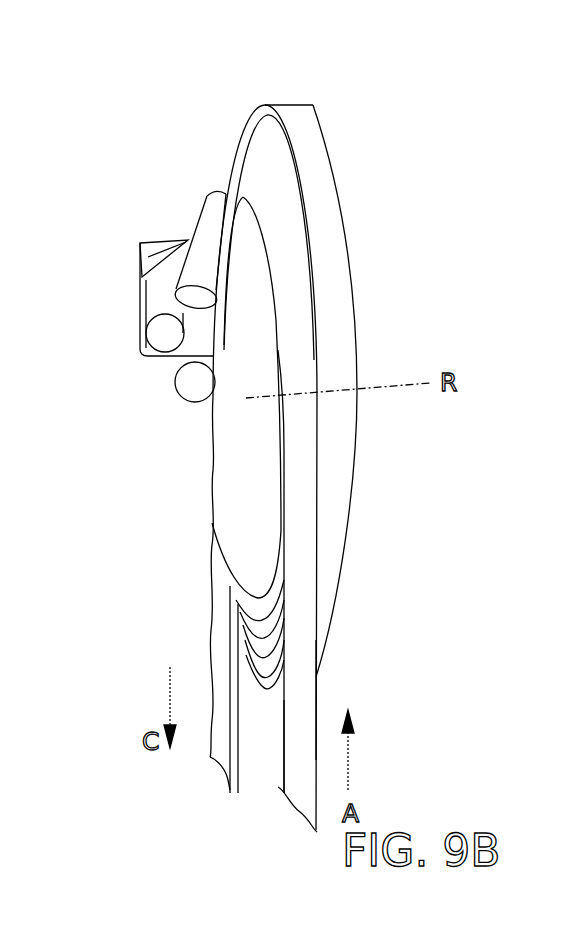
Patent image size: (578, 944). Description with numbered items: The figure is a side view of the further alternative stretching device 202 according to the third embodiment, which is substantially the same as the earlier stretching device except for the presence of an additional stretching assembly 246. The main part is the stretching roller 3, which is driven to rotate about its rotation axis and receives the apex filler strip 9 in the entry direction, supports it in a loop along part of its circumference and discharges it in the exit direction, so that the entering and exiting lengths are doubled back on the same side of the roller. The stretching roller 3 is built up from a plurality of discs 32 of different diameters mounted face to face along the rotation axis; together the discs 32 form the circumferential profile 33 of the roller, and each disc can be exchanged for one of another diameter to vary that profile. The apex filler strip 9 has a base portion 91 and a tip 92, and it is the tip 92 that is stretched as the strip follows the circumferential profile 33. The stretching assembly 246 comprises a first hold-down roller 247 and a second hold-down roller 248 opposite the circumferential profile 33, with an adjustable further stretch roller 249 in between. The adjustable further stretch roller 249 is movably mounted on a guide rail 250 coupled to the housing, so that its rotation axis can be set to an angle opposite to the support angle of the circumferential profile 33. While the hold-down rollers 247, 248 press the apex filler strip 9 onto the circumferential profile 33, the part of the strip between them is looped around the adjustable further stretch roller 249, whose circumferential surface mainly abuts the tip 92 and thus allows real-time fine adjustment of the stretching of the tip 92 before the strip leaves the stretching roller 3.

The further alternative stretching device 202 is at (408, 137).
The tip 92 is at (268, 108).
The stretching roller 3 is at (336, 351).
The discs 32 is at (246, 618).
The base portion 91 is at (228, 781).
The circumferential profile 33 is at (263, 692).
The apex filler strip 9 is at (297, 712).
The stretching assembly 246 is at (130, 212).
The guide rail 250 is at (142, 263).
The first hold-down roller 247 is at (211, 197).
The adjustable further stretch roller 249 is at (162, 342).
The second hold-down roller 248 is at (182, 388).